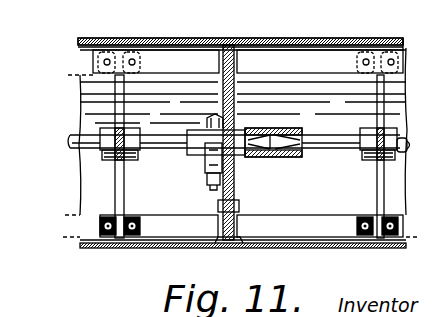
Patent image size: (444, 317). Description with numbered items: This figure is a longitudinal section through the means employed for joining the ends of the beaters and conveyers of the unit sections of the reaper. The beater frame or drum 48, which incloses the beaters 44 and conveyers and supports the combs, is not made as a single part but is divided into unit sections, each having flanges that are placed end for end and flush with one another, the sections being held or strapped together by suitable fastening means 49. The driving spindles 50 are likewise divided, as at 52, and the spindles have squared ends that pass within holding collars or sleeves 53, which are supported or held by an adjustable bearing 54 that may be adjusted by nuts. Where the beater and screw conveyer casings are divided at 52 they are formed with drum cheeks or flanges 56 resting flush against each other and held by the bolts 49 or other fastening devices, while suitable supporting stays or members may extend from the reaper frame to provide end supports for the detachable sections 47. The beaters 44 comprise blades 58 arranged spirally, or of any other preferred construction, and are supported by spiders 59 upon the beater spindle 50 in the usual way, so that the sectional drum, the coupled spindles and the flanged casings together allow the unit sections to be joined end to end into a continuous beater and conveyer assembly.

The beater 44 is at (185, 203).
The detachable section 47 is at (362, 36).
The beater frame or drum 48 is at (160, 30).
The fastening means 49 is at (283, 93).
The driving spindle 50 is at (326, 150).
The division 52 is at (245, 150).
The holding collar or sleeve 53 is at (190, 158).
The adjustable bearing 54 is at (177, 143).
The drum cheek or flange 56 is at (235, 187).
The blade 58 is at (164, 62).
The spider 59 is at (115, 183).